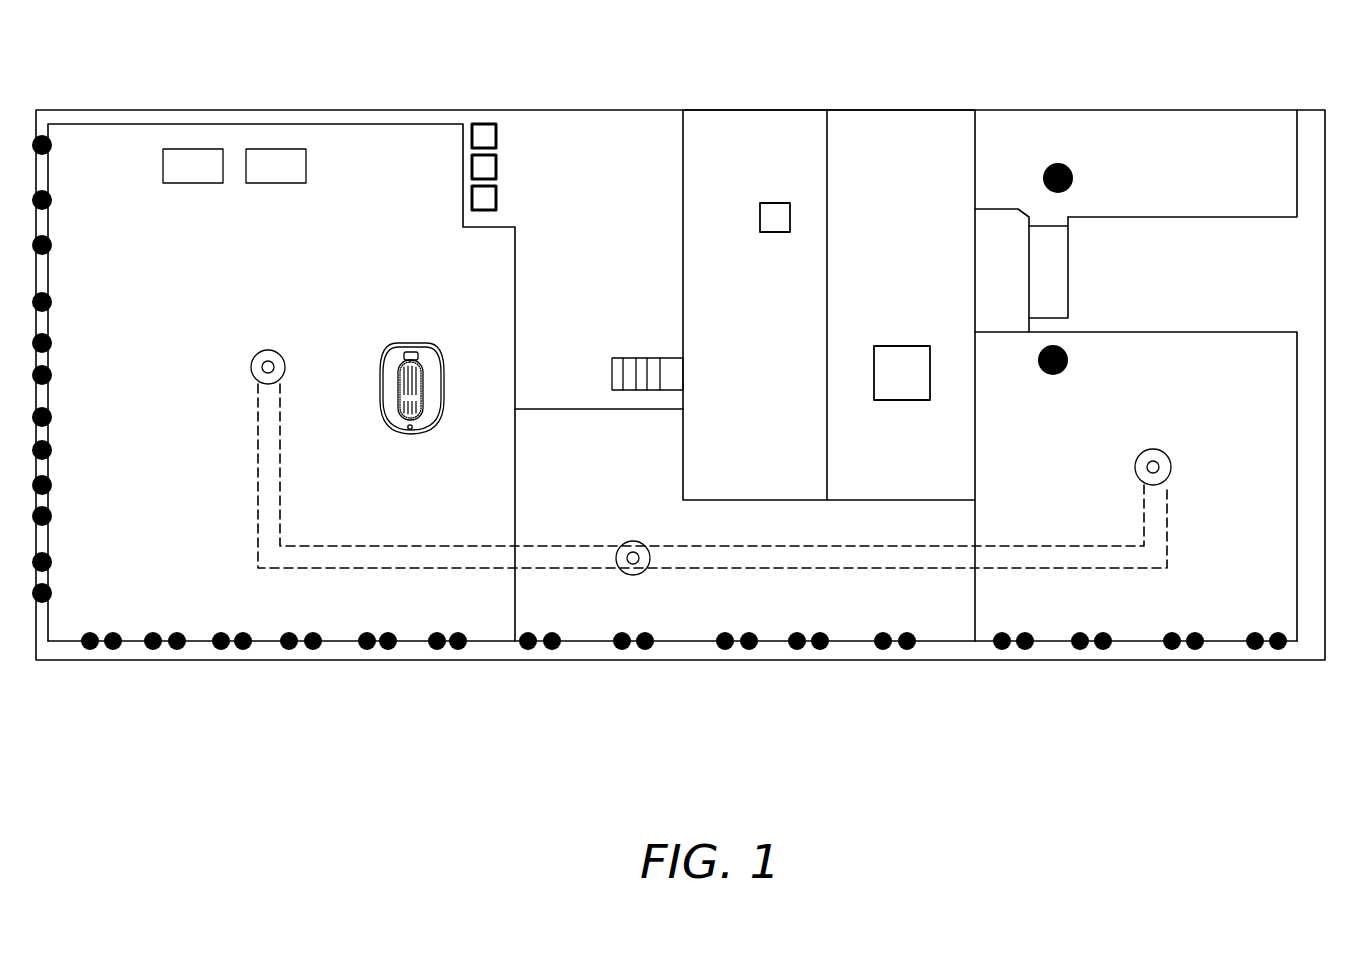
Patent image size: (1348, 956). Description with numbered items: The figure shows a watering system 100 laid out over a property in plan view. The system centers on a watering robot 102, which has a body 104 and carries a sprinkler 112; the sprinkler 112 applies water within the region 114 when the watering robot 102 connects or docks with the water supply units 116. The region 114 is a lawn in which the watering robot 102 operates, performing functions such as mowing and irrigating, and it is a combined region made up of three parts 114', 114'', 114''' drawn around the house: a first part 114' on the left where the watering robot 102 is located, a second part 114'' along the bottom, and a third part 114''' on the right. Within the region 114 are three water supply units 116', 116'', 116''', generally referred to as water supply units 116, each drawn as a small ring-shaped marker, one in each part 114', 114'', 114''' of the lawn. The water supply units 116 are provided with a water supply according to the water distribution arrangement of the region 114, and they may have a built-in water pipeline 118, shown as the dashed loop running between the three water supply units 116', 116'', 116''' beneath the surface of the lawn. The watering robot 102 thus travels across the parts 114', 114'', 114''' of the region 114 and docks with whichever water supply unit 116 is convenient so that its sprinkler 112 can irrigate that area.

The watering system 100 is at (1078, 45).
The watering robot 102 is at (449, 358).
The body 104 is at (386, 401).
The sprinkler 112 is at (410, 432).
The region 114 is at (664, 442).
The first part of the region 114' is at (280, 380).
The second part of the region 114'' is at (745, 570).
The third part of the region 114''' is at (1135, 486).
The water supply units 116 is at (629, 477).
The first water supply unit 116' is at (186, 369).
The second water supply unit 116'' is at (590, 573).
The third water supply unit 116''' is at (1088, 468).
The built-in water pipeline 118 is at (268, 362).